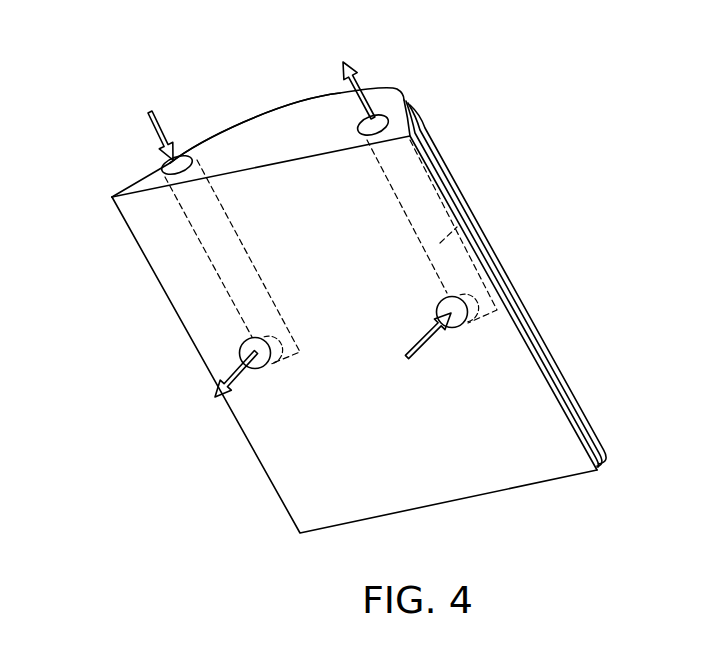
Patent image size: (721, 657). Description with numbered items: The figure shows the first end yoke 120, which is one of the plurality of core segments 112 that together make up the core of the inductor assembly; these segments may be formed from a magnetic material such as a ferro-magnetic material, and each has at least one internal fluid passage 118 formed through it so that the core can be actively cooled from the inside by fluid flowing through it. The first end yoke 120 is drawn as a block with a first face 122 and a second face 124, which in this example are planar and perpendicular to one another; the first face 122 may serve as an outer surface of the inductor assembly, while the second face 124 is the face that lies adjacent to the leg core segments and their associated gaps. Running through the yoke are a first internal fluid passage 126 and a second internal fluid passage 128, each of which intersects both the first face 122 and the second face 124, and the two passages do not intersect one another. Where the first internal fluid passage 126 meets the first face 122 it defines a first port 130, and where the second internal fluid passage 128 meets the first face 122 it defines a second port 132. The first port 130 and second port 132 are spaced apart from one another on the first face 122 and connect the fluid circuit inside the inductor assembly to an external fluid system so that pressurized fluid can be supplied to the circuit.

The core segment 112 is at (247, 132).
The internal fluid passage 118 is at (125, 312).
The first end yoke 120 is at (448, 96).
The first face 122 is at (383, 100).
The second face 124 is at (308, 470).
The first internal fluid passage 126 is at (150, 349).
The second internal fluid passage 128 is at (528, 270).
The first port 130 is at (163, 160).
The second port 132 is at (415, 118).